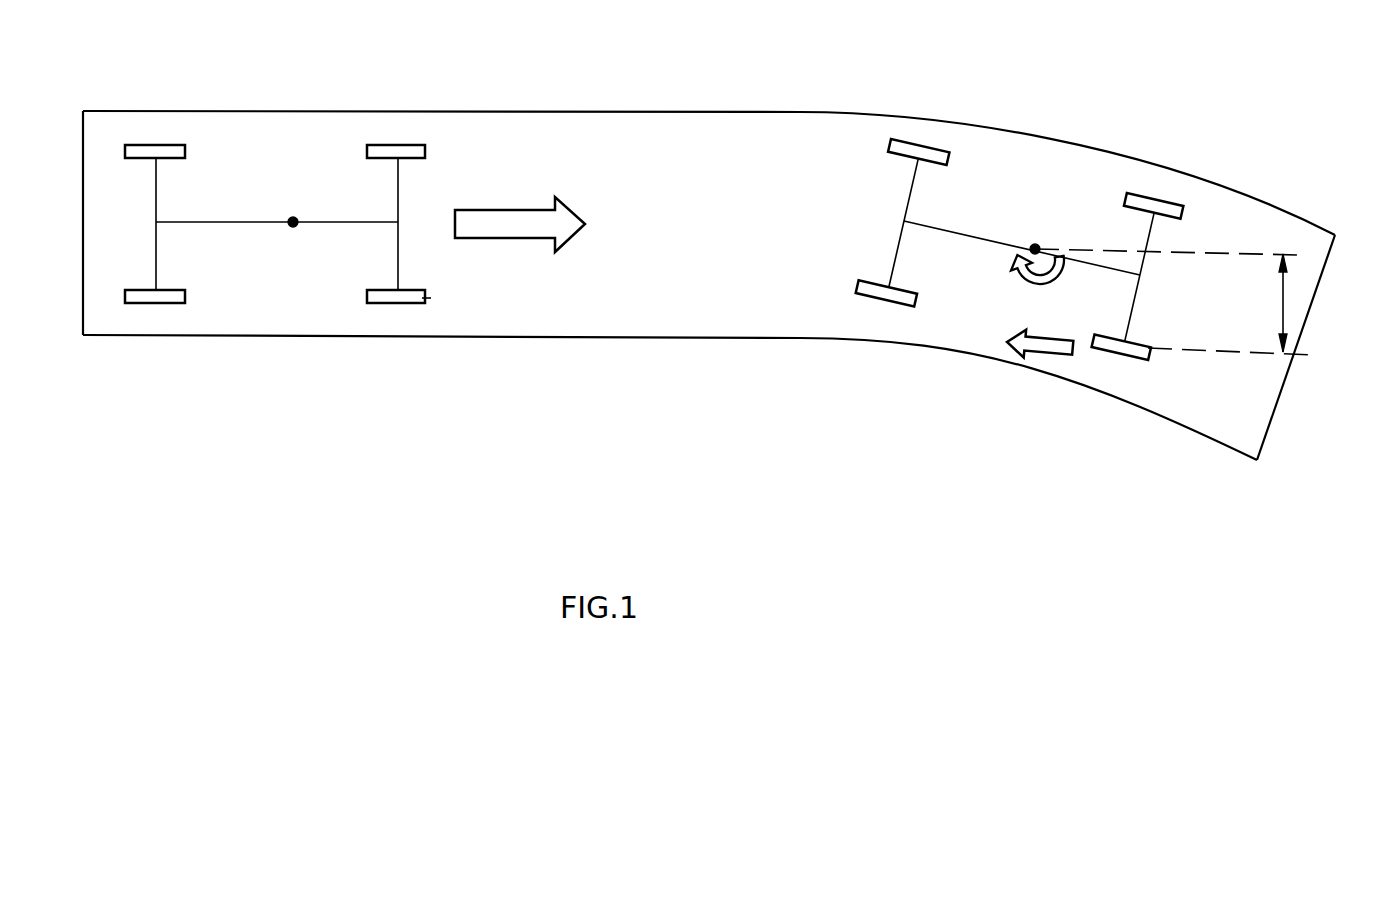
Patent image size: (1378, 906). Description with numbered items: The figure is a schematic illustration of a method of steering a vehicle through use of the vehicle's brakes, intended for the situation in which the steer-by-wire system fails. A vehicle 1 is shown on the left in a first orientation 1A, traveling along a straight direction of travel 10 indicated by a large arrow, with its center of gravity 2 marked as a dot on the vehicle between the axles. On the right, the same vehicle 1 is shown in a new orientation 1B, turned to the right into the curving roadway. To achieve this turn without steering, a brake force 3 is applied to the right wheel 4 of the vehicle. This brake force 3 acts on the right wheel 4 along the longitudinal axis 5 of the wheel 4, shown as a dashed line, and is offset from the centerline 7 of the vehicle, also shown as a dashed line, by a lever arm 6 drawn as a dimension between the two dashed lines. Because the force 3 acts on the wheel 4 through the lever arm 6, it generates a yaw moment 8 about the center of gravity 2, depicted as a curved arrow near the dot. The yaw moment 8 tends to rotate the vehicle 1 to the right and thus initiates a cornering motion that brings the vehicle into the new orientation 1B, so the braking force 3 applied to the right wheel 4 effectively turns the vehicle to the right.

The first orientation 1A is at (222, 108).
The new orientation 1B is at (997, 163).
The vehicle 1 is at (282, 147).
The center of gravity 2 is at (293, 227).
The brake force 3 is at (1053, 351).
The right wheel 4 is at (413, 305).
The longitudinal axis 5 is at (1203, 355).
The lever arm 6 is at (1283, 305).
The centerline 7 is at (1252, 254).
The yaw moment 8 is at (1018, 283).
The direction of travel 10 is at (505, 210).